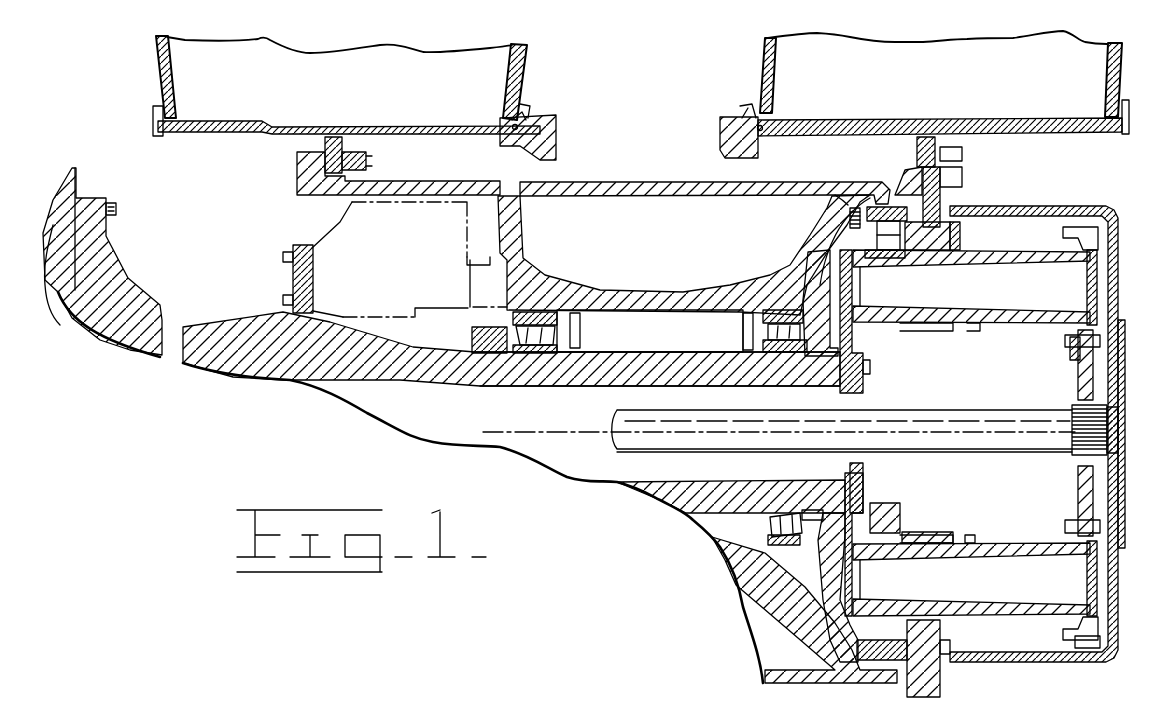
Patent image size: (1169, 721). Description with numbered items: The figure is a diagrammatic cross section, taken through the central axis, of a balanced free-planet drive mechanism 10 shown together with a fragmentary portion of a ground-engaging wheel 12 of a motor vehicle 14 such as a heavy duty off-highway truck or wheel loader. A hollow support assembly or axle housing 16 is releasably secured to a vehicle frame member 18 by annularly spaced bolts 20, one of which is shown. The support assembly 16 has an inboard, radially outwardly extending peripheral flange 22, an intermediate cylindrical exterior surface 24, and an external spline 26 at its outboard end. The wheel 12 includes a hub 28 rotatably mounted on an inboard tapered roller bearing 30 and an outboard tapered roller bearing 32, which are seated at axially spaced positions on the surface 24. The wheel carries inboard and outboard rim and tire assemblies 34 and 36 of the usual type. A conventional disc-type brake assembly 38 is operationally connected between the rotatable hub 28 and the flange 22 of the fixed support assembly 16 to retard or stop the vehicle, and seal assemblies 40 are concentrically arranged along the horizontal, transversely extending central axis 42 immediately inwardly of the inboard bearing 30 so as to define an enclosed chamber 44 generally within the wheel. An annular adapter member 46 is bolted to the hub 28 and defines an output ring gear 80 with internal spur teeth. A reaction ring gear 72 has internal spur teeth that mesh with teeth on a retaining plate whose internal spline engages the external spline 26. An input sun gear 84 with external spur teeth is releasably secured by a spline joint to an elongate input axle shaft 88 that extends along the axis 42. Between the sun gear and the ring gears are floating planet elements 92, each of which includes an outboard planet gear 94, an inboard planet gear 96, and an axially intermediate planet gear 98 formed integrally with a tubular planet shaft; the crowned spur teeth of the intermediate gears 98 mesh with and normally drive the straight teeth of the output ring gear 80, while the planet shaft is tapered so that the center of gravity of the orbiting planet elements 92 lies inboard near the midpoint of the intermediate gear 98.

The balanced free-planet drive mechanism 10 is at (815, 587).
The ground-engaging wheel 12 is at (148, 117).
The motor vehicle 14 is at (80, 176).
The hollow support assembly 16 is at (212, 283).
The vehicle frame member 18 is at (47, 300).
The fasteners or bolts 20 is at (118, 212).
The peripheral flange 22 is at (306, 247).
The intermediate cylindrical exterior surface 24 is at (605, 352).
The external spline 26 is at (823, 356).
The hub 28 is at (666, 290).
The inboard tapered roller bearing 30 is at (545, 318).
The outboard tapered roller bearing 32 is at (774, 295).
The inboard rim and tire assembly 34 is at (522, 84).
The outboard rim and tire assembly 36 is at (757, 61).
The disc-type brake assembly 38 is at (415, 251).
The seal assemblies 40 is at (466, 319).
The central axis 42 is at (565, 427).
The enclosed chamber 44 is at (678, 345).
The annular adapter member 46 is at (940, 700).
The reaction ring gear 72 is at (893, 203).
The output ring gear 80 is at (944, 226).
The input sun gear 84 is at (1082, 366).
The input axle shaft 88 is at (662, 440).
The floating planet elements 92 is at (1000, 328).
The outboard planet gear 94 is at (1092, 649).
The inboard planet gear 96 is at (889, 500).
The intermediate planet gear 98 is at (930, 532).